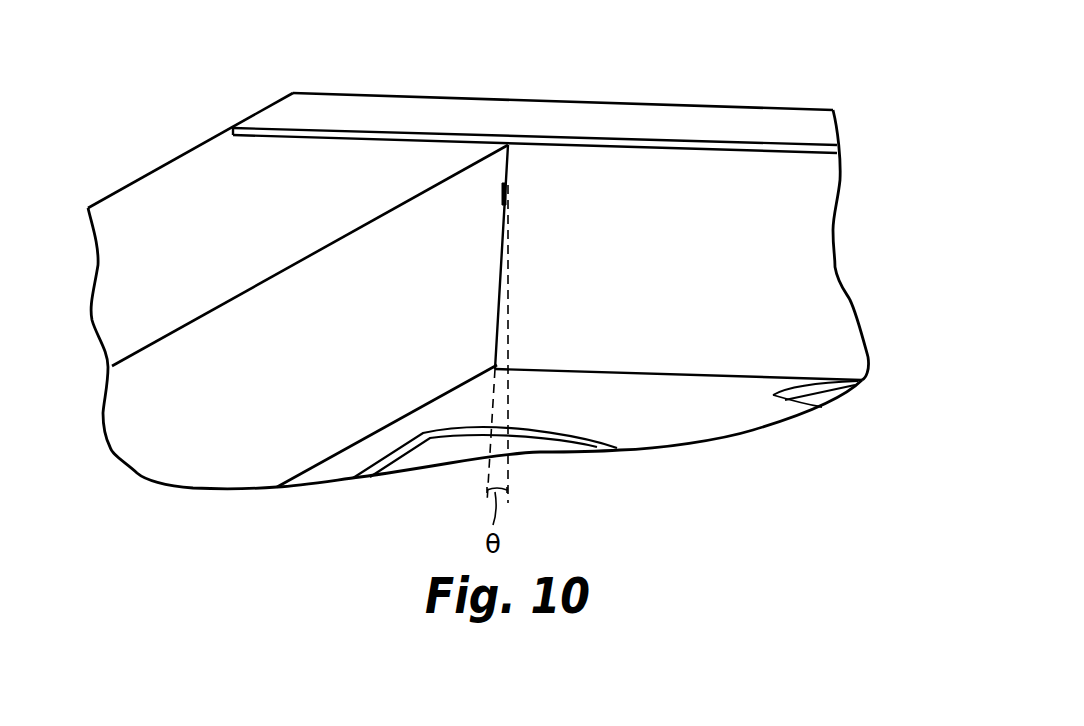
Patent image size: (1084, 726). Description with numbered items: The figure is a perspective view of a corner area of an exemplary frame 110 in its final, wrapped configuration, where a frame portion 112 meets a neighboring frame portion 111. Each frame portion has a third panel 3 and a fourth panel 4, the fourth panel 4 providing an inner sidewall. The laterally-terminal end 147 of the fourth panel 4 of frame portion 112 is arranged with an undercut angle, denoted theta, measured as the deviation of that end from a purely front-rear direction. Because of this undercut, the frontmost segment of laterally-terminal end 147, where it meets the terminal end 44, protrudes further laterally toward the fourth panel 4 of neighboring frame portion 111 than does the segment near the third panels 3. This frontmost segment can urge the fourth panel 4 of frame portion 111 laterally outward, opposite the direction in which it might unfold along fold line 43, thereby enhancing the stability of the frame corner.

The third panel 3 is at (400, 105).
The fourth panel 4 is at (823, 270).
The fold line 43 is at (282, 267).
The terminal end 44 is at (620, 372).
The laterally-terminal end 147 is at (495, 353).
The frame 110 is at (812, 57).
The frame portion 111 is at (94, 400).
The frame portion 112 is at (878, 173).